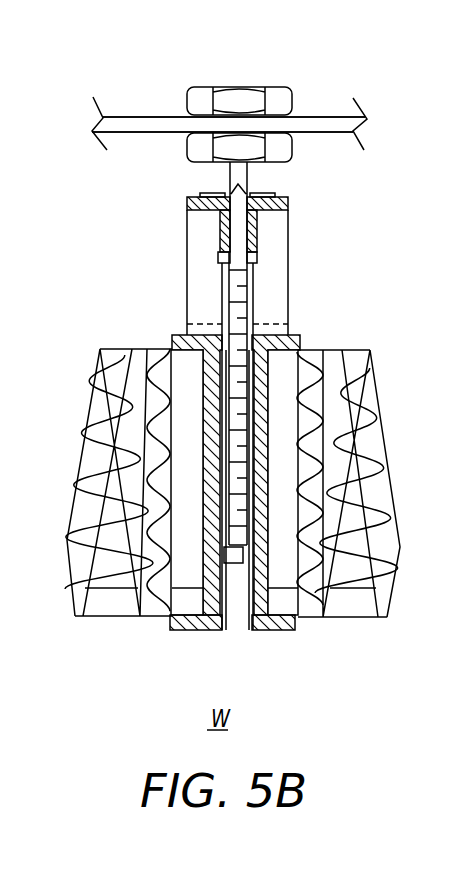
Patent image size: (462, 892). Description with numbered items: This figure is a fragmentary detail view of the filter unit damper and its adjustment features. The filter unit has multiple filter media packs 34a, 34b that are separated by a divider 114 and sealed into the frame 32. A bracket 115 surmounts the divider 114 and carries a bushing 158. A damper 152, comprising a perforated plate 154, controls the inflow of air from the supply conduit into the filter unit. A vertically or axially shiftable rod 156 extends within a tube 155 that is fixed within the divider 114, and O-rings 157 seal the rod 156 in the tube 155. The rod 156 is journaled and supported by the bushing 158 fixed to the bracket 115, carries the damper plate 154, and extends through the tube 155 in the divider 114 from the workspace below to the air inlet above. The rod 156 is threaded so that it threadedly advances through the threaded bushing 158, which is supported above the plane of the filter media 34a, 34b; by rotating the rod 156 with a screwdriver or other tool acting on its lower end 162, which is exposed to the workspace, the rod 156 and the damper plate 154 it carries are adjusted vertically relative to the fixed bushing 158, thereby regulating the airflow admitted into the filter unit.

The perforated plate 154 is at (167, 113).
The damper 152 is at (130, 137).
The bushing 158 is at (250, 194).
The bracket 115 is at (198, 283).
The rod 156 is at (245, 271).
The O-rings 157 is at (240, 305).
The lower end 162 is at (238, 567).
The tube 155 is at (230, 615).
The divider 114 is at (210, 598).
The frame 32 is at (153, 600).
The filter media pack 34a is at (132, 568).
The filter media pack 34b is at (340, 568).